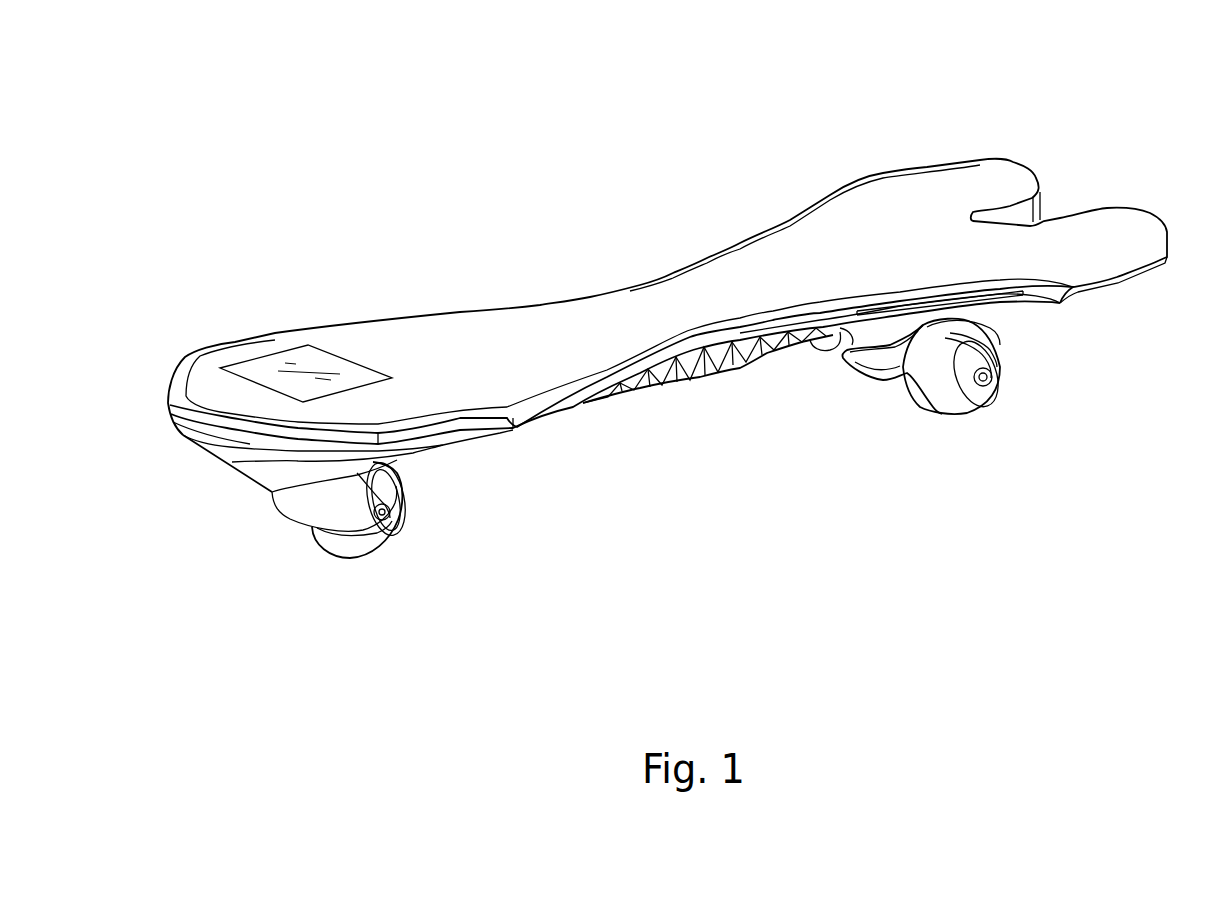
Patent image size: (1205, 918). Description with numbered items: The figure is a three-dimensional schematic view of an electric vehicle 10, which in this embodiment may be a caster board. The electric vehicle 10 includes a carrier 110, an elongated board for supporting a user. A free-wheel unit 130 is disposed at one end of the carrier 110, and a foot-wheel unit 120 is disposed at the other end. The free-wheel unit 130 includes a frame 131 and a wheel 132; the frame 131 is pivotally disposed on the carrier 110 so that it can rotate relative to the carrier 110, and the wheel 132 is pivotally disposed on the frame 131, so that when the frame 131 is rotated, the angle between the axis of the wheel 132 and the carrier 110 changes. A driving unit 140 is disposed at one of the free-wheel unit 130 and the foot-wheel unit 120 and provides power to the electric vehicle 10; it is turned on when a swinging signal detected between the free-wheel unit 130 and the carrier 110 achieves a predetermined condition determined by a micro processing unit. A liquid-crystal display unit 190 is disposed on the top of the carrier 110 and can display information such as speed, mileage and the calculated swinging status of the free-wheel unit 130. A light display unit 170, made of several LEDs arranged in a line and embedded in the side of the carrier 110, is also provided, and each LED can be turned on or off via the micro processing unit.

The electric vehicle 10 is at (181, 114).
The carrier 110 is at (938, 174).
The foot-wheel unit 120 is at (313, 503).
The free-wheel unit 130 is at (997, 508).
The frame 131 is at (987, 392).
The wheel 132 is at (909, 397).
The driving unit 140 is at (997, 333).
The light display unit 170 is at (692, 341).
The liquid-crystal display unit 190 is at (306, 358).